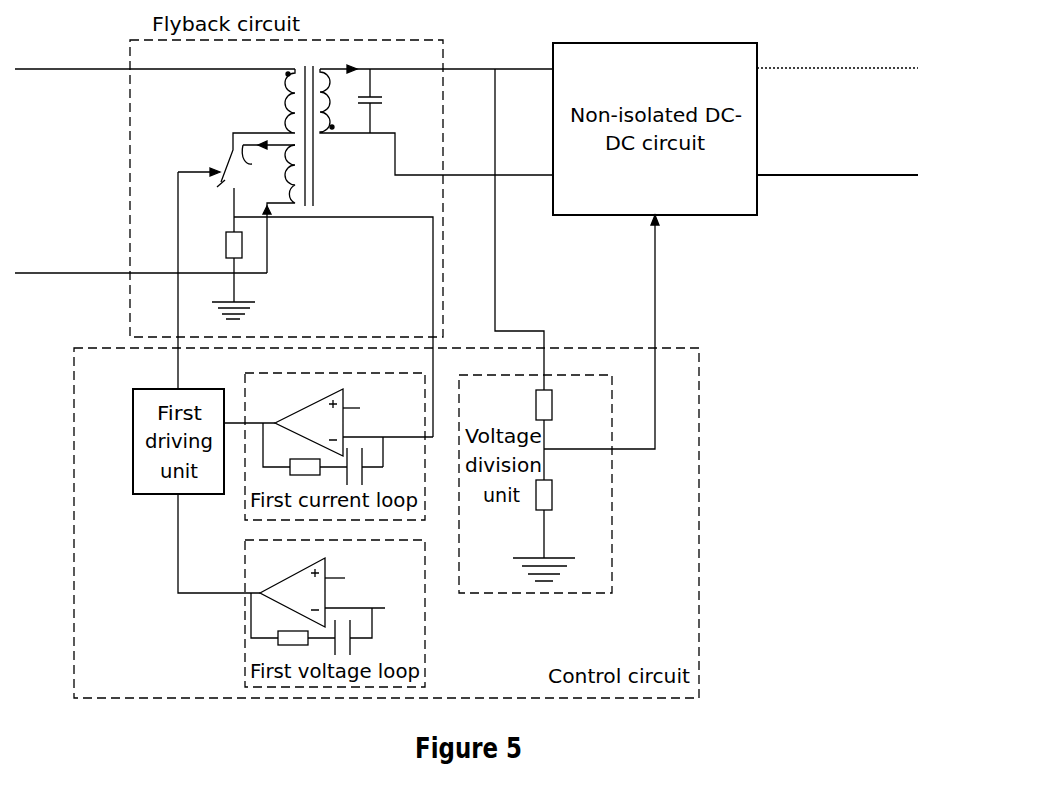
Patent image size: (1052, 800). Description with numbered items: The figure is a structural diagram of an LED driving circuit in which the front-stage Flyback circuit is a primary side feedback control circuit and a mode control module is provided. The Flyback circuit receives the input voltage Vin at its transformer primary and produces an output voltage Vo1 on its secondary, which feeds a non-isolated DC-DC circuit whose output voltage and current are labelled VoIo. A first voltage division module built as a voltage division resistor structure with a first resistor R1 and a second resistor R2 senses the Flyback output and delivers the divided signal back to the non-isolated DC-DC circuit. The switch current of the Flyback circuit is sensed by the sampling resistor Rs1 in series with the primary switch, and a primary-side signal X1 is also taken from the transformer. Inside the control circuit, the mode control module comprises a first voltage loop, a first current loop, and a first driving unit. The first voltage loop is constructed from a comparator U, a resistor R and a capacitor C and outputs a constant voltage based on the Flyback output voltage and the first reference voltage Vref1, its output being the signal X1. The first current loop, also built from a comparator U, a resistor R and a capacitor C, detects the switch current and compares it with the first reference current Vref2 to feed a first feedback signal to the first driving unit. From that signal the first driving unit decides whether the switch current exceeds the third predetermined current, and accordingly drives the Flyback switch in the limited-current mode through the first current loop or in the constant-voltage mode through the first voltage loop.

The input voltage Vin is at (155, 171).
The output voltage / output current VoIo is at (826, 125).
The primary current sampling signal X1 is at (329, 381).
The current sampling resistor Rs1 is at (310, 327).
The flyback output voltage Vo1 is at (388, 101).
The first resistor R1 is at (560, 435).
The second resistor R2 is at (549, 530).
The comparator U is at (301, 508).
The first reference current Vref2 is at (382, 408).
The first reference voltage Vref1 is at (362, 580).
The resistor R is at (291, 543).
The capacitor C is at (345, 551).